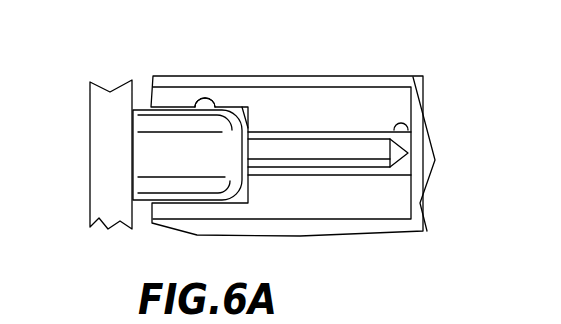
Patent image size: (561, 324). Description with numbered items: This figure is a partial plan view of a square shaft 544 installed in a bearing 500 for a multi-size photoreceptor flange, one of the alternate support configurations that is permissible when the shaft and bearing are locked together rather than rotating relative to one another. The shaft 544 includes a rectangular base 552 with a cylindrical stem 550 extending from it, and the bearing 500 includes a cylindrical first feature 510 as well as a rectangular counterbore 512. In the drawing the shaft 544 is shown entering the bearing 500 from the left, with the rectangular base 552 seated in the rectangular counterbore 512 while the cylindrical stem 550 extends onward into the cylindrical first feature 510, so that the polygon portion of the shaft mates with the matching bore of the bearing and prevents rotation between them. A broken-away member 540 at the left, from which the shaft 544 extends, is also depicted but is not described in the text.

The bearing 500 is at (368, 86).
The cylindrical first feature 510 is at (413, 133).
The rectangular counterbore 512 is at (219, 107).
The mating connector 540 is at (84, 71).
The shaft 544 is at (173, 187).
The cylindrical stem 550 is at (378, 176).
The rectangular base 552 is at (242, 107).